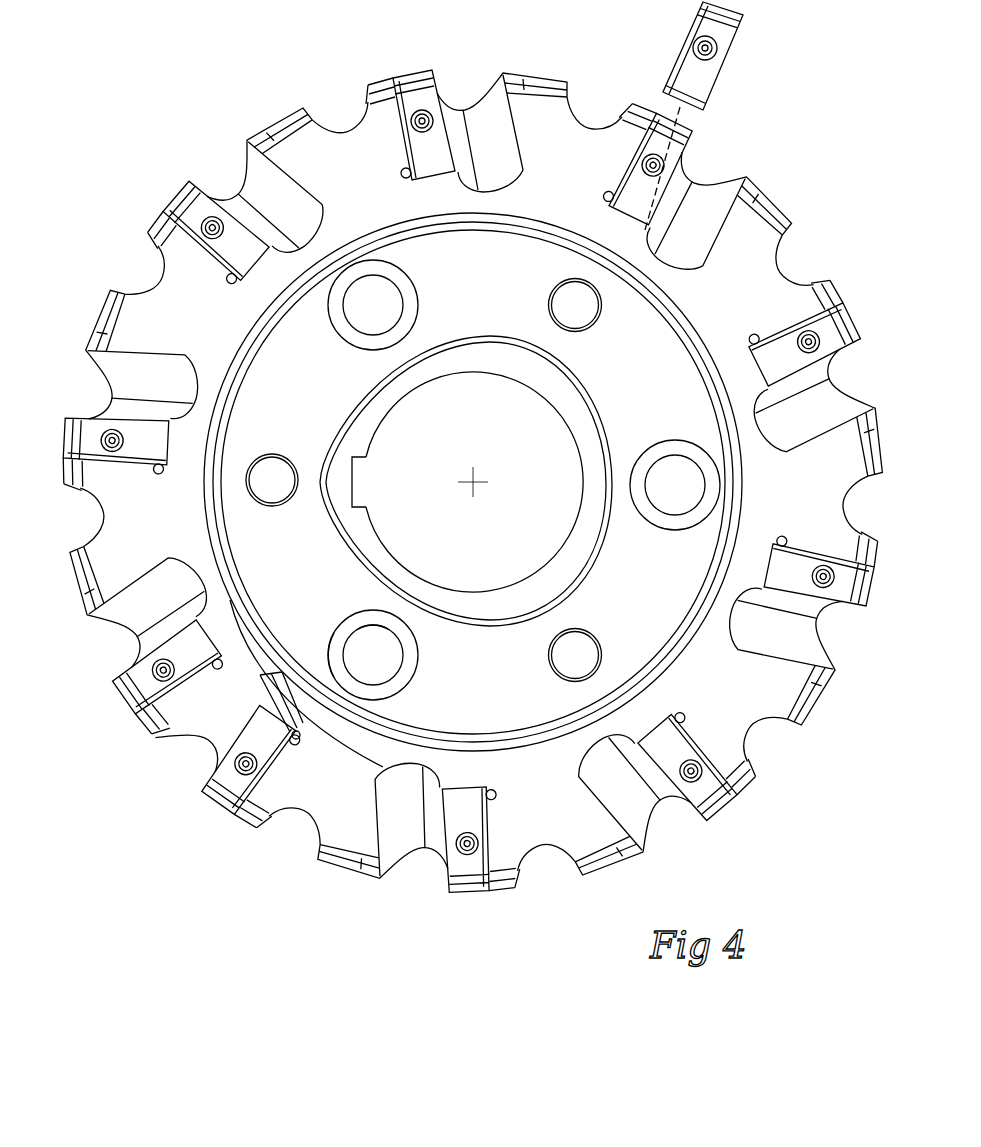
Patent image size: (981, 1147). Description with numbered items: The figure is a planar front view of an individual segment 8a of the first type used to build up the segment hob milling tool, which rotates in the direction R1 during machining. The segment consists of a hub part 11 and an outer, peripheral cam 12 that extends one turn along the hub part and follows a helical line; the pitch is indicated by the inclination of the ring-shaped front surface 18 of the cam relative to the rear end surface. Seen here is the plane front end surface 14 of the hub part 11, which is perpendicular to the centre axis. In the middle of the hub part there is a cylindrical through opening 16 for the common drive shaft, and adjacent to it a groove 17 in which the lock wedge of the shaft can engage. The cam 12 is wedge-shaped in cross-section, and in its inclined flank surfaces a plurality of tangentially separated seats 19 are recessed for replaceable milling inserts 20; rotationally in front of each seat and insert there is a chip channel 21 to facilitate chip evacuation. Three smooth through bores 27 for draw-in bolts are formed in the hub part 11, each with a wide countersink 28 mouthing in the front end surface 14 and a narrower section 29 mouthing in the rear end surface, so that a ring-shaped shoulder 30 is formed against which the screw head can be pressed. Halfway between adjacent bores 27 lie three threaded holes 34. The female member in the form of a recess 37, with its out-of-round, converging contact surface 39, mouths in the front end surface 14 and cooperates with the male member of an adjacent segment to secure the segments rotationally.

The segment 8a is at (318, 84).
The hub part 11 is at (236, 333).
The peripheral cam 12 is at (312, 878).
The front end surface 14 is at (660, 593).
The middle through opening 16 is at (483, 400).
The groove 17 is at (353, 482).
The ring-shaped front surface 18 is at (492, 772).
The seat 19 is at (667, 153).
The milling insert 20 is at (407, 93).
The chip channel 21 is at (477, 122).
The through bore 27 is at (422, 692).
The countersink 28 is at (409, 636).
The narrower section 29 is at (360, 628).
The ring-shaped shoulder 30 is at (338, 640).
The threaded hole 34 is at (284, 446).
The female member 37 is at (608, 420).
The contact surface 39 is at (558, 372).
The direction of rotation R1 is at (182, 165).